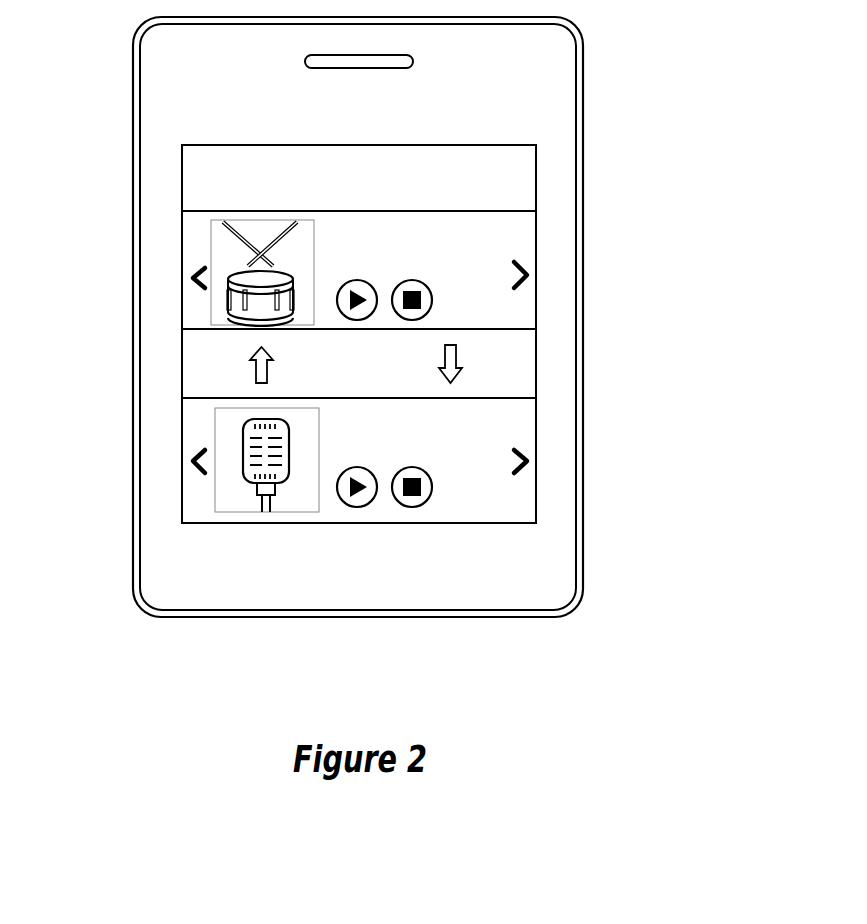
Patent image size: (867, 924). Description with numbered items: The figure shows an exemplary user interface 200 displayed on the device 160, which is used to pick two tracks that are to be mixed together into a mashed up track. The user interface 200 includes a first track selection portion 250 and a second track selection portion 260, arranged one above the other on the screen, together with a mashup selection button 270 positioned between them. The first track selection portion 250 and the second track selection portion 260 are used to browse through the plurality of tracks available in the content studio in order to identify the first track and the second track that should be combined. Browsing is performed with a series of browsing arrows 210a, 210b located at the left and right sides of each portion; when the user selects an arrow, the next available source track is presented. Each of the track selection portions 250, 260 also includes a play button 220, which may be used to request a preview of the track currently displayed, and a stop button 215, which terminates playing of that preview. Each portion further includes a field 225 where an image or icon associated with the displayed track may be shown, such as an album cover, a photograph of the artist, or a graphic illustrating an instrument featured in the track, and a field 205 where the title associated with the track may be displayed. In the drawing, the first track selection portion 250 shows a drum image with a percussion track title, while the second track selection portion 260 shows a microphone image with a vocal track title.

The device 160 is at (583, 52).
The user interface 200 is at (617, 139).
The field 205 is at (500, 237).
The browsing arrow 210a is at (536, 273).
The browsing arrow 210b is at (192, 279).
The stop button 215 is at (432, 303).
The play button 220 is at (366, 316).
The field 225 is at (221, 238).
The first track selection portion 250 is at (193, 307).
The second track selection portion 260 is at (193, 463).
The mashup selection button 270 is at (193, 365).